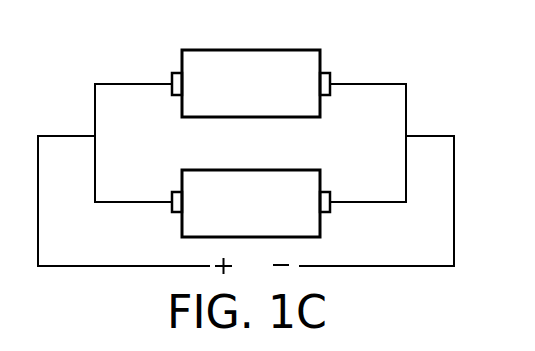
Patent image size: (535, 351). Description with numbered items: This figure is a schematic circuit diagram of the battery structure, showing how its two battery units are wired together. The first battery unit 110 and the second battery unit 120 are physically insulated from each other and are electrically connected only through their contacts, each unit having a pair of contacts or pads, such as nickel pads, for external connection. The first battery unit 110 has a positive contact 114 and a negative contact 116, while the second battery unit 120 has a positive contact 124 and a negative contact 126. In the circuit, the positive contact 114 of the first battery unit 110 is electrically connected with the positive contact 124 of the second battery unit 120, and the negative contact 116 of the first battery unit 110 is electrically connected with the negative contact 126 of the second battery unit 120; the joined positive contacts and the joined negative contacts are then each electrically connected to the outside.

The first battery unit 110 is at (296, 50).
The positive contact 114 is at (172, 74).
The negative contact 116 is at (330, 74).
The second battery unit 120 is at (296, 170).
The positive contact 124 is at (172, 194).
The negative contact 126 is at (330, 193).